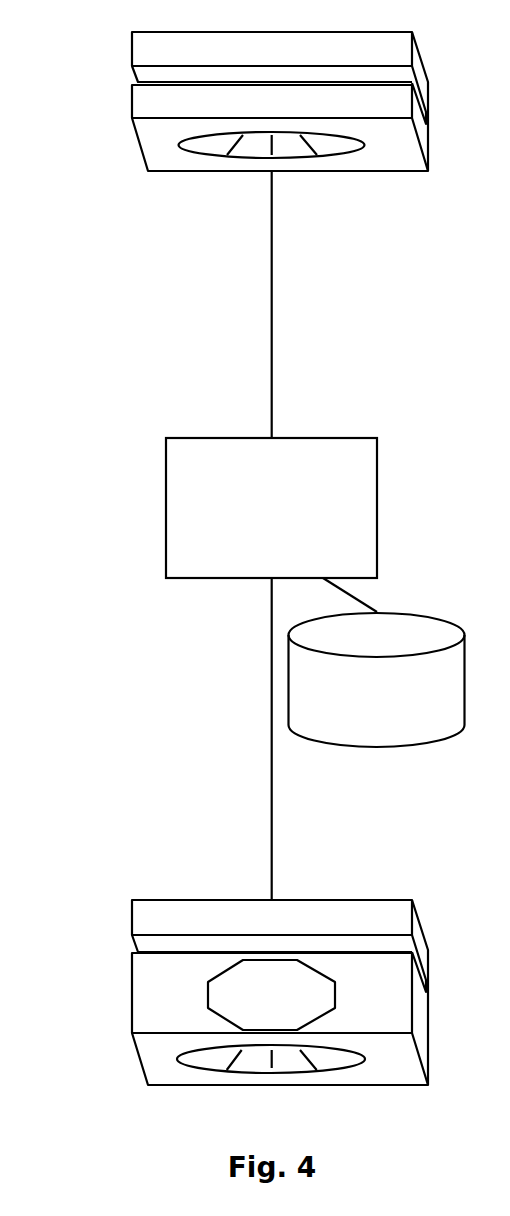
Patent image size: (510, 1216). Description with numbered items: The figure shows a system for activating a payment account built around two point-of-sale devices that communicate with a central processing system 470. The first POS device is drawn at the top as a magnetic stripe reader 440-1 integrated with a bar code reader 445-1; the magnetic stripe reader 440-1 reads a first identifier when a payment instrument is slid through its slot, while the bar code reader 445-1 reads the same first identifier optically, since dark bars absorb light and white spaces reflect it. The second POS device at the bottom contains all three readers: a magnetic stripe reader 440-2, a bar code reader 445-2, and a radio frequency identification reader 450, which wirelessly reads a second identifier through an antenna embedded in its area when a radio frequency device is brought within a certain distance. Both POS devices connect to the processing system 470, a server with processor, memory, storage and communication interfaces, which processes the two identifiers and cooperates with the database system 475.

The magnetic stripe reader 440-1 is at (132, 70).
The bar code reader 445-1 is at (327, 158).
The processing system 470 is at (367, 570).
The database system 475 is at (456, 728).
The magnetic stripe reader 440-2 is at (132, 940).
The radio frequency identification reader 450 is at (148, 997).
The bar code reader 445-2 is at (327, 1073).